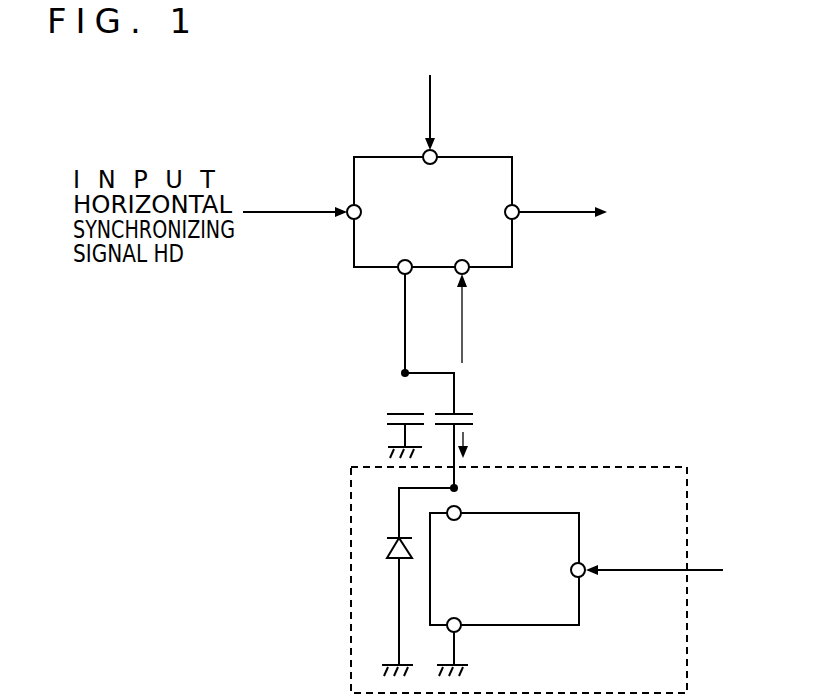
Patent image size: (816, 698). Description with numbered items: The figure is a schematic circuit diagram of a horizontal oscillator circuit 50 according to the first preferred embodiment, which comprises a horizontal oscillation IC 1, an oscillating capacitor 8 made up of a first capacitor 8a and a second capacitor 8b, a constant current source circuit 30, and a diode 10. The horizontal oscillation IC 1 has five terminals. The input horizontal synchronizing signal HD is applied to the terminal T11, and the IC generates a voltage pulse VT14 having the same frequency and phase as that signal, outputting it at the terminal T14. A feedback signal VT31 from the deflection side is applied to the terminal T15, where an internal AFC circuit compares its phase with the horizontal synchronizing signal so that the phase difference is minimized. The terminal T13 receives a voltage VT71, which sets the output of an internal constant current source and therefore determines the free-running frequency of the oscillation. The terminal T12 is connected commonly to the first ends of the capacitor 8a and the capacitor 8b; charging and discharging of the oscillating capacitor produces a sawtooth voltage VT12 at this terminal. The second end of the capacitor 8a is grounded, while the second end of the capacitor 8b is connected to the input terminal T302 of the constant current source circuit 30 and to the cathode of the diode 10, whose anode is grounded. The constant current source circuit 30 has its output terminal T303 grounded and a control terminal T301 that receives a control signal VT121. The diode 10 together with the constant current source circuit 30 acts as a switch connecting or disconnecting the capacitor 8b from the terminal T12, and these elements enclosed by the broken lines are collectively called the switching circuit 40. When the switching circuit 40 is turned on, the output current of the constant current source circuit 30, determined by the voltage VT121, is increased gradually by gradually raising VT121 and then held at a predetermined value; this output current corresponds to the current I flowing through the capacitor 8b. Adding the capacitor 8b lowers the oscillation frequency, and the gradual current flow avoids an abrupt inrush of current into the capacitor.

The horizontal oscillation IC 1 is at (396, 155).
The horizontal oscillator circuit 50 is at (342, 137).
The terminal T11 is at (348, 220).
The terminal T12 is at (397, 275).
The terminal T13 is at (470, 275).
The terminal T14 is at (519, 207).
The terminal T15 is at (440, 150).
The voltage VT31 is at (460, 112).
The voltage pulse VT14 is at (563, 226).
The voltage VT12 is at (370, 323).
The voltage VT71 is at (489, 318).
The oscillating capacitor 8 is at (394, 376).
The first capacitor 8a is at (383, 417).
The second capacitor 8b is at (472, 417).
The current I is at (468, 443).
The switching circuit 40 is at (688, 608).
The diode 10 is at (390, 557).
The constant current source circuit 30 is at (580, 615).
The control terminal T301 is at (583, 565).
The input terminal T302 is at (462, 510).
The output terminal T303 is at (462, 628).
The control signal VT121 is at (690, 574).